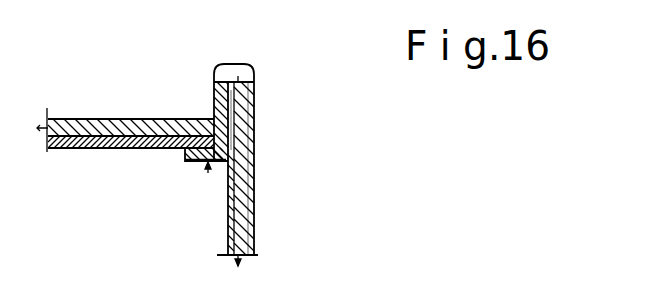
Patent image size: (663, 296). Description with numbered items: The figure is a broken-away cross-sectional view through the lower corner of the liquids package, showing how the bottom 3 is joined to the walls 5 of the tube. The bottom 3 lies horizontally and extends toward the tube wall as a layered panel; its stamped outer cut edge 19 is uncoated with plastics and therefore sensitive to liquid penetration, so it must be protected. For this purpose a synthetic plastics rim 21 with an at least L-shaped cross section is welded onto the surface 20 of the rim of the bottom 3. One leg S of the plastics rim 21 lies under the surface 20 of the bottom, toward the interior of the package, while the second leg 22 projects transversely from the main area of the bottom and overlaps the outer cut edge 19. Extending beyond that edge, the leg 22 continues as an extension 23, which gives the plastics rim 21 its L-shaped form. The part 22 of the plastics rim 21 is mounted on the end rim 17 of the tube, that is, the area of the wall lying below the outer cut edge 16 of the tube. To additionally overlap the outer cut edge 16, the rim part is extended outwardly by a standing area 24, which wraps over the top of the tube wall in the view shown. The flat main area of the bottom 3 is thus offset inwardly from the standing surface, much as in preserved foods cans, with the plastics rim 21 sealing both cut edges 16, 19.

The bottom 3 is at (80, 117).
The walls 5 is at (254, 223).
The outer cut edge 16 is at (251, 78).
The end rim 17 is at (256, 122).
The outer cut edge 19 is at (193, 151).
The surface 20 is at (120, 147).
The plastics rim 21 is at (220, 94).
The second leg 22 is at (258, 102).
The extension 23 is at (258, 141).
The standing area 24 is at (238, 76).
The leg S is at (208, 185).